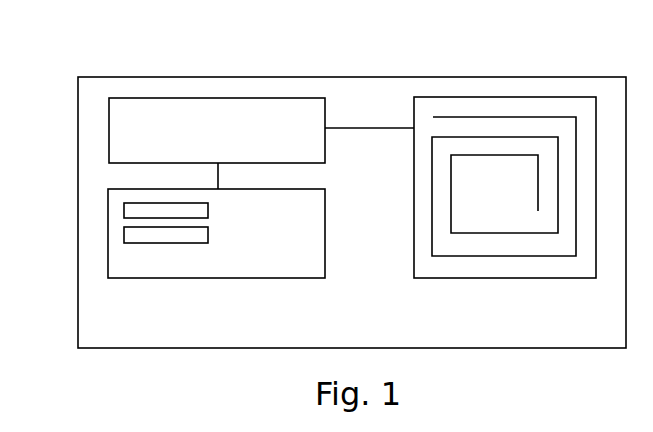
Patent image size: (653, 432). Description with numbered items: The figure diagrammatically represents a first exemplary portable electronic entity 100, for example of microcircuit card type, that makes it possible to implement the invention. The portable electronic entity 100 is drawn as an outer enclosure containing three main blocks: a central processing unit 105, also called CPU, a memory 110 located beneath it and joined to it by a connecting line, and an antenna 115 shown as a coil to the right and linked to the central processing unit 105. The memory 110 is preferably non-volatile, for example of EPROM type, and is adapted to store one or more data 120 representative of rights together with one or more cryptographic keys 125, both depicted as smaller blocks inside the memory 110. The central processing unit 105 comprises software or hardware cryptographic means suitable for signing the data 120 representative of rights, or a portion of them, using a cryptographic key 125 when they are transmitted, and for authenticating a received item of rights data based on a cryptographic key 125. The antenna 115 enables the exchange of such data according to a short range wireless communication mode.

The portable electronic entity 100 is at (315, 77).
The central processing unit 105 is at (173, 99).
The memory 110 is at (180, 278).
The antenna 115 is at (507, 97).
The data representative of rights 120 is at (124, 205).
The cryptographic key 125 is at (124, 230).